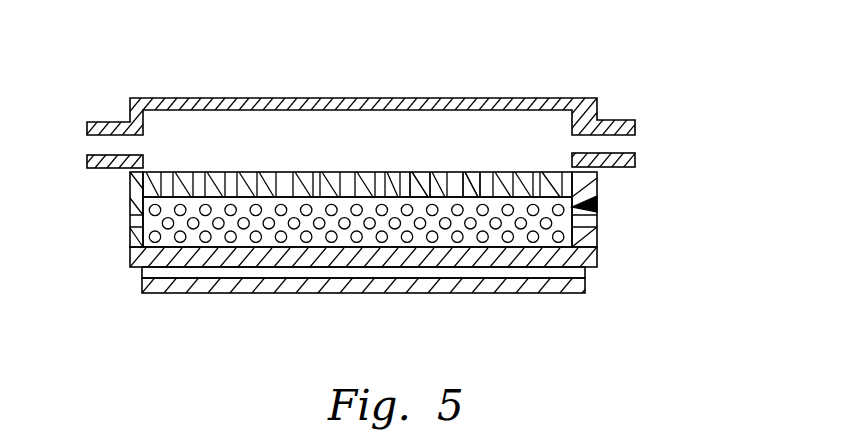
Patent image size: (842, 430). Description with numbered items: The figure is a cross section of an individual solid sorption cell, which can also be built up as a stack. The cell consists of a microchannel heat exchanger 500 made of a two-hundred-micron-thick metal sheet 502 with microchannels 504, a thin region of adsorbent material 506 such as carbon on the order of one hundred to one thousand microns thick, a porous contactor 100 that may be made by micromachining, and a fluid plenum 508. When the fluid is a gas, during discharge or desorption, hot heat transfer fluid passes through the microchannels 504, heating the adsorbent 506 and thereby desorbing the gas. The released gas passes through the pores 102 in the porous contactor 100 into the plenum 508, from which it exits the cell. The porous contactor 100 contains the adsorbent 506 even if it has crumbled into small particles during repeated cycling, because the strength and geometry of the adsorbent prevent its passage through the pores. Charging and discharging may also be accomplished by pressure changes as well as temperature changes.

The porous contactor 100 is at (515, 173).
The pores 102 is at (477, 173).
The microchannel heat exchanger 500 is at (388, 196).
The metal sheet 502 is at (508, 293).
The microchannels 504 is at (578, 273).
The adsorbent material 506 is at (597, 200).
The fluid plenum 508 is at (383, 148).